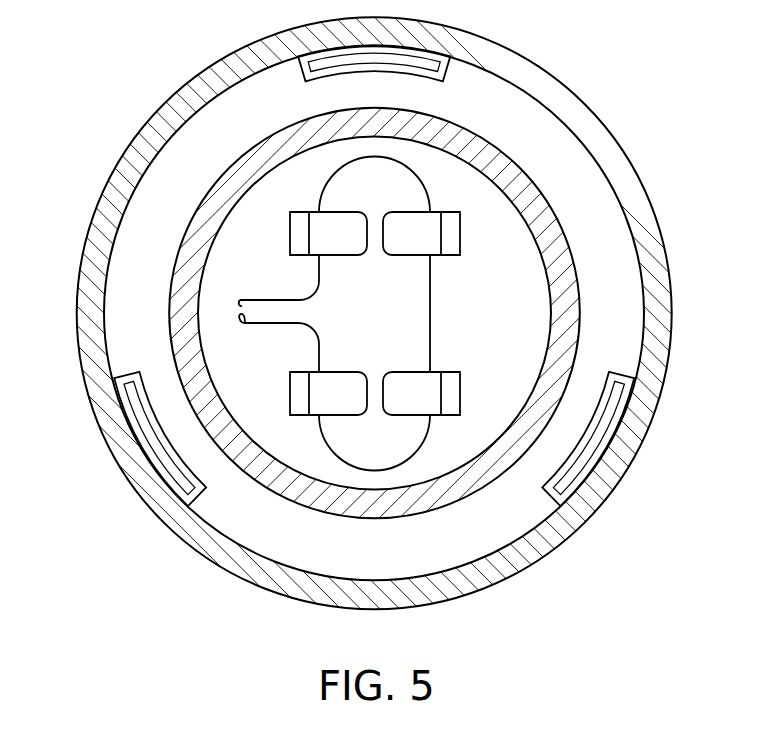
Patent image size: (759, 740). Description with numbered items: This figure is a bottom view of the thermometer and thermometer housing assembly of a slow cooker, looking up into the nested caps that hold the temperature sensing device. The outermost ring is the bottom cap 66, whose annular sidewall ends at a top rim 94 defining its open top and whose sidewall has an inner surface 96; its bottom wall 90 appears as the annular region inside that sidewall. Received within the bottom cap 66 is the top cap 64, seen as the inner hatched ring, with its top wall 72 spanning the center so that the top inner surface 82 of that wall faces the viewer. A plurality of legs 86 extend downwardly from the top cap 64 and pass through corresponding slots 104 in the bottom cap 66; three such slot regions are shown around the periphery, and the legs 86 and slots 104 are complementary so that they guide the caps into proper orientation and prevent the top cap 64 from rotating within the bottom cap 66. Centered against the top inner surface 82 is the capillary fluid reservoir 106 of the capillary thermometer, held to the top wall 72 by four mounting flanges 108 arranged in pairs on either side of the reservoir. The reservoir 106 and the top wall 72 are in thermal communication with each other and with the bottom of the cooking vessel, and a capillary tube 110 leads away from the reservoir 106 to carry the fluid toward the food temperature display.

The top cap 64 is at (282, 196).
The bottom cap 66 is at (619, 165).
The top wall 72 is at (533, 333).
The top inner surface 82 is at (513, 329).
The legs 86 is at (602, 437).
The bottom wall 90 is at (608, 230).
The top rim 94 is at (667, 258).
The inner surface 96 is at (648, 322).
The slots 104 is at (553, 498).
The capillary fluid reservoir 106 is at (427, 290).
The mounting flanges 108 is at (400, 248).
The capillary tube 110 is at (273, 298).